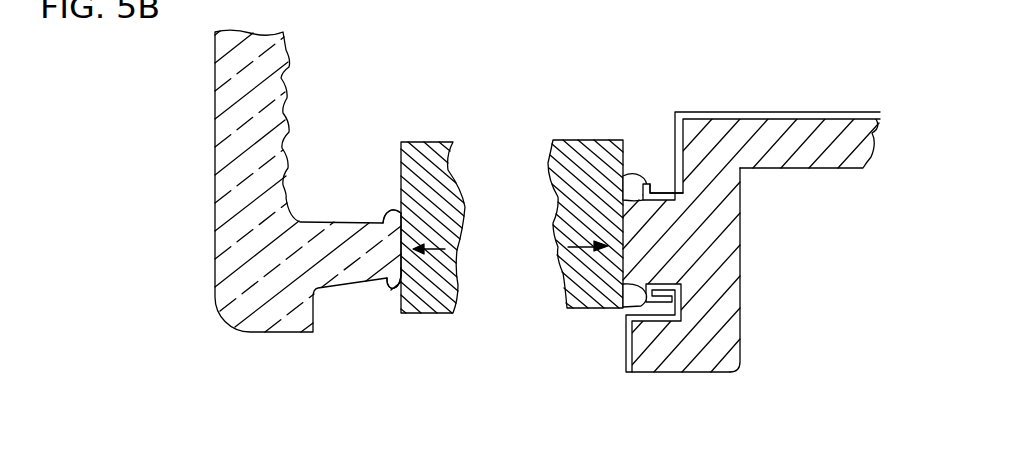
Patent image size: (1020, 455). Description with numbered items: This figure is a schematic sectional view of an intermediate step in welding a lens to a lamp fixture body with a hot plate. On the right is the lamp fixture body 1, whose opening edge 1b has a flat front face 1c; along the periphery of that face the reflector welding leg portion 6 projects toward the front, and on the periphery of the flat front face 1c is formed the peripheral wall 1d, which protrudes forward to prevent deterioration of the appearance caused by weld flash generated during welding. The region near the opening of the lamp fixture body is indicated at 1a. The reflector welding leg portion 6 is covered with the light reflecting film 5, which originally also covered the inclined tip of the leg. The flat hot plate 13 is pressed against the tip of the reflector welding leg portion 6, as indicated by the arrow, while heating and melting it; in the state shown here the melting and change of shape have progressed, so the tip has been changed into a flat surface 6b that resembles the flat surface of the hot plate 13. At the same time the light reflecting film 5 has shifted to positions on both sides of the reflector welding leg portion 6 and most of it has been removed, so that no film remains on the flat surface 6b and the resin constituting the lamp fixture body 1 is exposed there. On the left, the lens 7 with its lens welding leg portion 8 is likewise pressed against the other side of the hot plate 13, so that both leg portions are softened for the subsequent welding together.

The lamp fixture body 1 is at (805, 130).
The opening of lamp body 1a is at (638, 5).
The opening edge 1b is at (742, 346).
The flat front face 1c is at (674, 162).
The peripheral wall 1d is at (677, 357).
The light reflecting film 5 is at (688, 112).
The reflector welding leg portion 6 is at (630, 337).
The flat surface 6b is at (628, 240).
The lens 7 is at (233, 151).
The lens welding leg portion 8 is at (352, 245).
The hot plate 13 is at (585, 287).